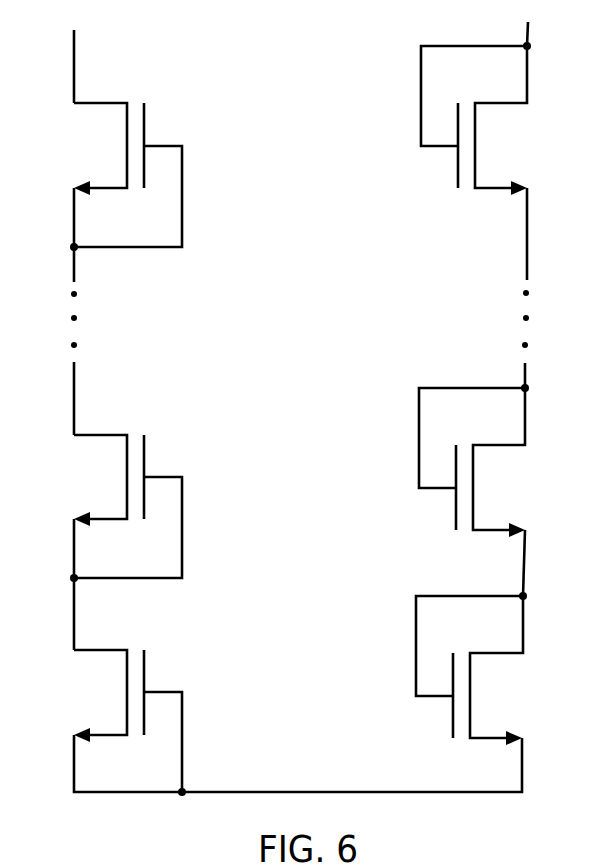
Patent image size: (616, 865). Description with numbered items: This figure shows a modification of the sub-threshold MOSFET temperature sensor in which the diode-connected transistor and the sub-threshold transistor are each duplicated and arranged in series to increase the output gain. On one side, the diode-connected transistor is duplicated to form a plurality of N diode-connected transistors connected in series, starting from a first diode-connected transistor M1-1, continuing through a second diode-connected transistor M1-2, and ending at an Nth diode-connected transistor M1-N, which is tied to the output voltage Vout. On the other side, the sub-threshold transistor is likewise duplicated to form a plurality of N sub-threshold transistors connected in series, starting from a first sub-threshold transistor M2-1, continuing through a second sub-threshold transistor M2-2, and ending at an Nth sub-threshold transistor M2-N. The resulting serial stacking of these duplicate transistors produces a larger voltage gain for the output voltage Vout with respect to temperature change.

The Nth sub-threshold transistor M2-N is at (99, 177).
The second sub-threshold transistor M2-2 is at (101, 508).
The first sub-threshold transistor M2-1 is at (101, 721).
The Nth diode-connected transistor M1-N is at (507, 120).
The second diode-connected transistor M1-2 is at (503, 460).
The first diode-connected transistor M1-1 is at (500, 668).
The output voltage Vout is at (554, 41).